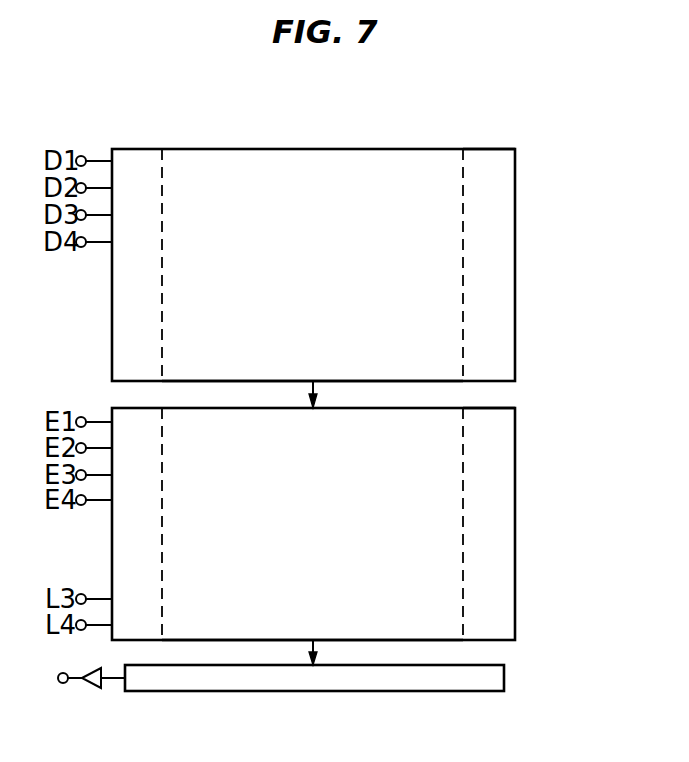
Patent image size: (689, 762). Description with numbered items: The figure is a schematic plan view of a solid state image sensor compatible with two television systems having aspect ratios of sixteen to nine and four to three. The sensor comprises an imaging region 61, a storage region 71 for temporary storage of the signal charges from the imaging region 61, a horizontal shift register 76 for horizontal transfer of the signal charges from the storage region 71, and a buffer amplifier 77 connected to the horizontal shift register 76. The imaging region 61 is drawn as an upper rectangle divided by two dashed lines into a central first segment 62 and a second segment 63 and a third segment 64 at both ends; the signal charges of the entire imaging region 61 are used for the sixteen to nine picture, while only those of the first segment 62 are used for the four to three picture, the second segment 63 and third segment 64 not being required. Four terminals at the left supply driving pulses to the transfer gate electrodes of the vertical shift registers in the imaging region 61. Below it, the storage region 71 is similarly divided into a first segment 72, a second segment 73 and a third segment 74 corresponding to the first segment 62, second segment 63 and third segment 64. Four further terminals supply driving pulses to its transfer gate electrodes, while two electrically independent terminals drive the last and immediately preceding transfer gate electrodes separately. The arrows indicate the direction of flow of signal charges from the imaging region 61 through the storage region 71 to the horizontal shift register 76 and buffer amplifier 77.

The imaging region 61 is at (267, 148).
The first segment 62 is at (400, 160).
The second segment 63 is at (140, 160).
The third segment 64 is at (495, 160).
The storage region 71 is at (517, 455).
The first segment 72 is at (437, 566).
The second segment 73 is at (135, 526).
The third segment 74 is at (503, 508).
The horizontal shift register 76 is at (486, 677).
The buffer amplifier 77 is at (90, 685).